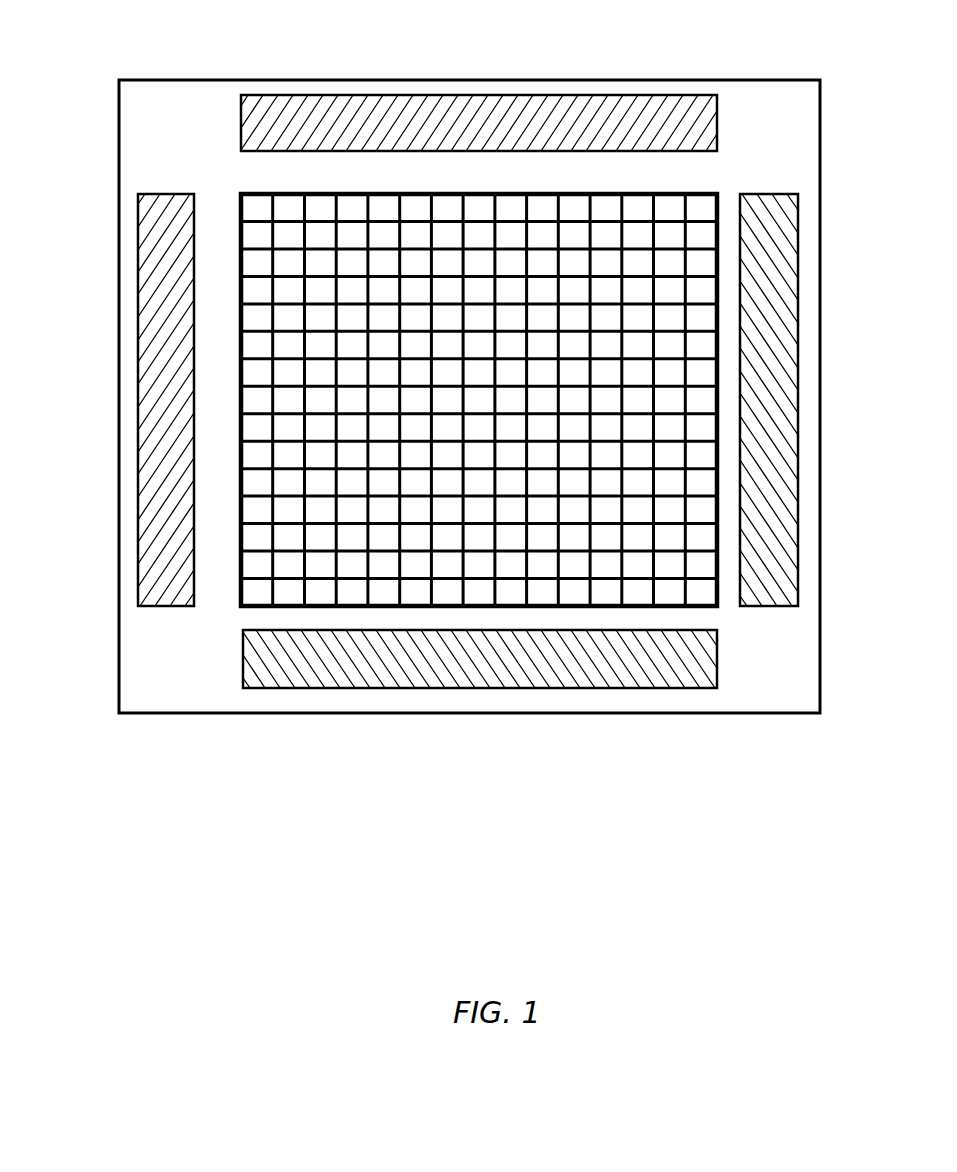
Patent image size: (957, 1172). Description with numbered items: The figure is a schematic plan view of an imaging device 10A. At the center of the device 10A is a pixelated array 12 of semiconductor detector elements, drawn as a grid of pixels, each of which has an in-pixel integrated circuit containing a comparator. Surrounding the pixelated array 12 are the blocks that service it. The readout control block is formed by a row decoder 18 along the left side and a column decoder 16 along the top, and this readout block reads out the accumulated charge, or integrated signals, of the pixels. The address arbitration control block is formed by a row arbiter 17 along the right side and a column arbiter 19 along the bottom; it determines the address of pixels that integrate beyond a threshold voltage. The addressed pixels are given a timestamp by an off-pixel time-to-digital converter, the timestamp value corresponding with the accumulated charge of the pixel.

The imaging device 10A is at (701, 858).
The pixelated array 12 is at (228, 184).
The column decoder 16 is at (547, 95).
The row arbiter 17 is at (798, 362).
The row decoder 18 is at (138, 432).
The column arbiter 19 is at (423, 688).